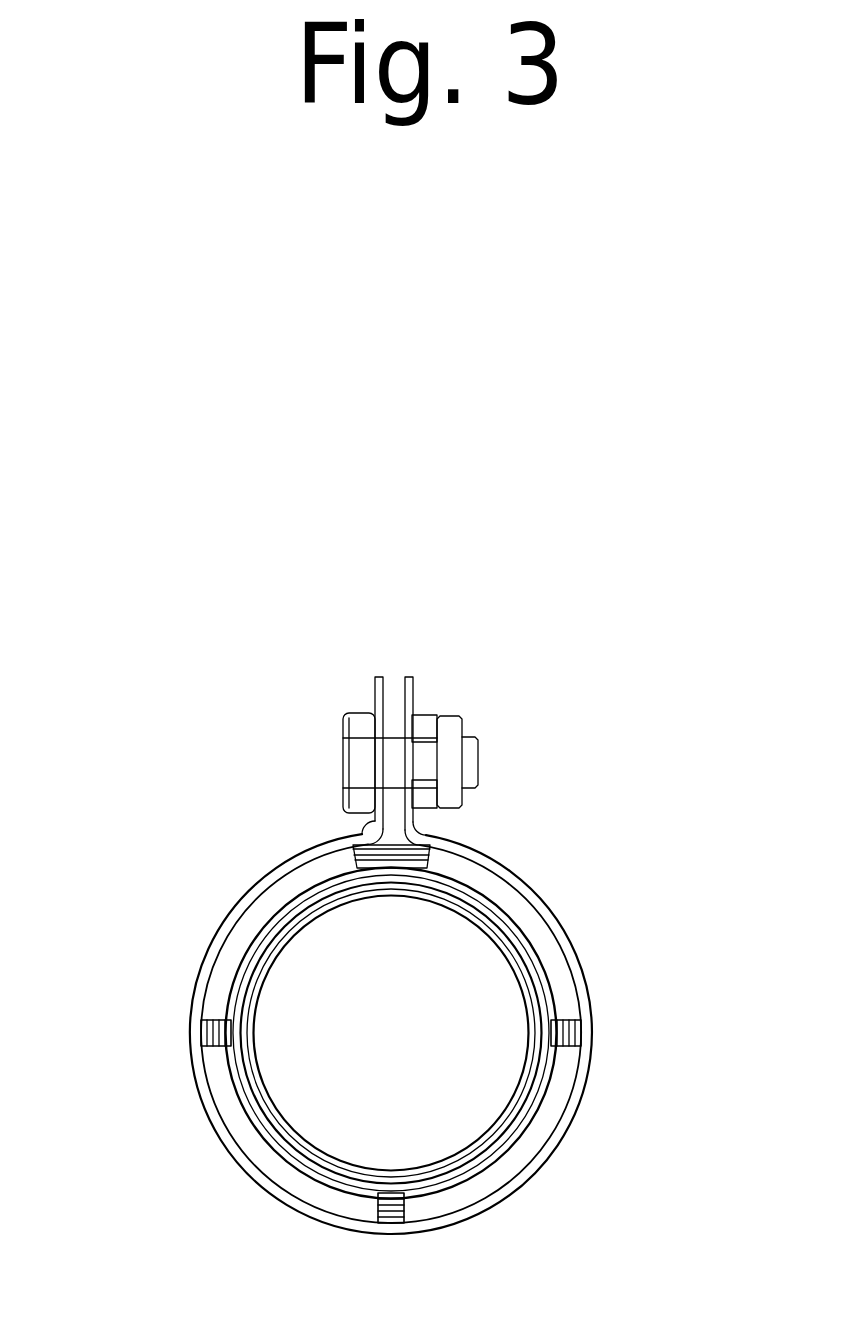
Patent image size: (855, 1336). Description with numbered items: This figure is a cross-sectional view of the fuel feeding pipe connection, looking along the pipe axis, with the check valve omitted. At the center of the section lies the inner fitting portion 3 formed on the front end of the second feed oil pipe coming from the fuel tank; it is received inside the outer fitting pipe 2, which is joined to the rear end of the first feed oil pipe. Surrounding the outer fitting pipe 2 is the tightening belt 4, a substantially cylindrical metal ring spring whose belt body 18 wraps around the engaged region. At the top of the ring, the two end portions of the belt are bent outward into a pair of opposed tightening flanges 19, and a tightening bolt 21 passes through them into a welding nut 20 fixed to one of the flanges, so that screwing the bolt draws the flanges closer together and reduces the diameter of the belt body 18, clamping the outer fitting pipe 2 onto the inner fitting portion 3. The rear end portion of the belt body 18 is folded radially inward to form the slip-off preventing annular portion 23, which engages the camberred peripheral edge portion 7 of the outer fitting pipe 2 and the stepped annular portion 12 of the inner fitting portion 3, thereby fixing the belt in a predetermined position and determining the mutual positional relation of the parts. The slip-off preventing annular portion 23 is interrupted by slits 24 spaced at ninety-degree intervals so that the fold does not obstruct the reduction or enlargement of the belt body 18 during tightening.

The outer fitting pipe 2 is at (457, 849).
The inner fitting portion 3 is at (536, 934).
The tightening belt 4 is at (221, 885).
The camberred peripheral edge portion 7 is at (372, 838).
The stepped annular portion 12 is at (355, 850).
The belt body 18 is at (230, 923).
The tightening flanges 19 is at (378, 753).
The welding nuts 20 is at (450, 722).
The tightening bolts 21 is at (360, 716).
The slip-off preventing annular portion 23 is at (232, 952).
The slits 24 is at (388, 843).